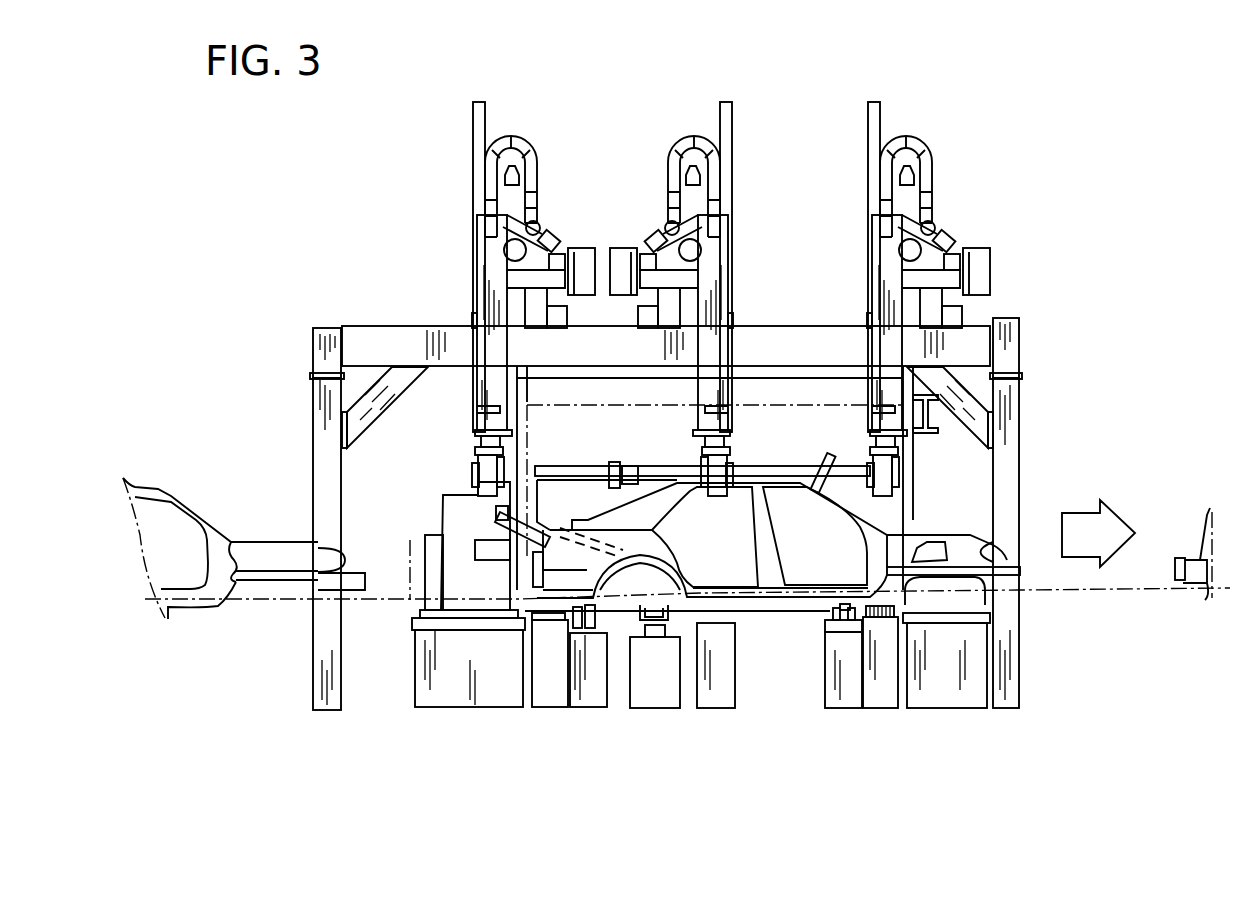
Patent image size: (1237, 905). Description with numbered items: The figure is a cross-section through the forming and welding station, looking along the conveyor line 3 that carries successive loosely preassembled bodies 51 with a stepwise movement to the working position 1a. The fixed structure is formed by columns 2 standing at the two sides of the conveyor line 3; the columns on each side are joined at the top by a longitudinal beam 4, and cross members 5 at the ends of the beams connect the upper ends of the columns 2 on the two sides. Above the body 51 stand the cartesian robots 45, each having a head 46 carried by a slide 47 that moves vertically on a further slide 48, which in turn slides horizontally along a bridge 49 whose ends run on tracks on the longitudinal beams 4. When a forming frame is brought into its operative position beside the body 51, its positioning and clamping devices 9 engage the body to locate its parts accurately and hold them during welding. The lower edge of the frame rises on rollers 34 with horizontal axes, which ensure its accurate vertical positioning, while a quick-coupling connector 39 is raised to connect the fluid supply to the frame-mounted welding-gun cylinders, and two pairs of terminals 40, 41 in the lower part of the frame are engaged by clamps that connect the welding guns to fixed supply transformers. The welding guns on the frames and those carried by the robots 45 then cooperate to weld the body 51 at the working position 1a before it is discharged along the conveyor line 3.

The working position 1a is at (843, 452).
The columns 2 is at (325, 430).
The conveyor line 3 is at (1127, 590).
The longitudinal beam 4 is at (812, 322).
The cross members 5 is at (325, 345).
The positioning and clamping devices 9 is at (620, 466).
The rollers 34 is at (545, 614).
The quick-coupling connector 39 is at (654, 640).
The terminals 40 is at (575, 628).
The terminals 41 is at (845, 628).
The cartesian robot 45 is at (470, 165).
The head 46 is at (492, 466).
The slide 47 is at (500, 352).
The further slide 48 is at (655, 320).
The bridge 49 is at (522, 310).
The body 51 is at (205, 537).